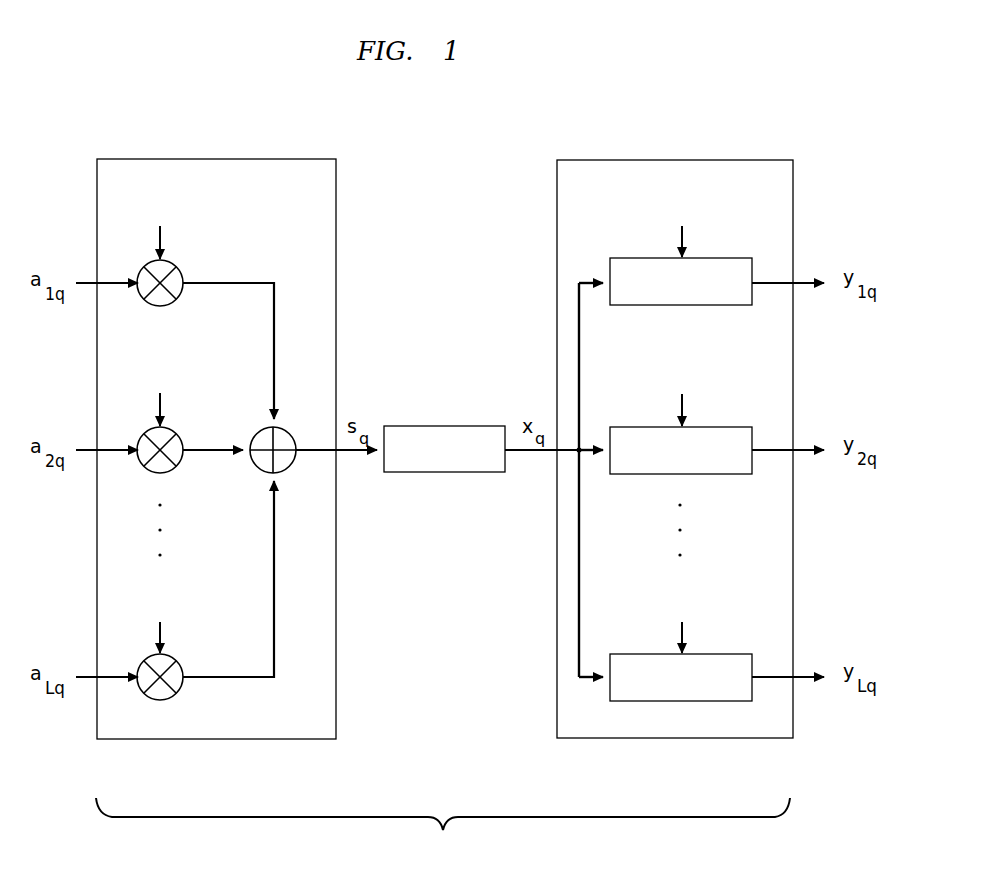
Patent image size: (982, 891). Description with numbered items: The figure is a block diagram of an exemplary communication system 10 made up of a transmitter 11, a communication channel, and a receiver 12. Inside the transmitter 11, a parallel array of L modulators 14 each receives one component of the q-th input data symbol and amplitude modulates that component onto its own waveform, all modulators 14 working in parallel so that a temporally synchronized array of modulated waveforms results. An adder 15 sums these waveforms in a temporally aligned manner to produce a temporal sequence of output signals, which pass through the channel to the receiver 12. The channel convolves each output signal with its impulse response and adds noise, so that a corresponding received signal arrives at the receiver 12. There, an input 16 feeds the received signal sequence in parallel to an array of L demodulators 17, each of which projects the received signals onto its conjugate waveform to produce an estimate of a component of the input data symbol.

The communication system 10 is at (443, 832).
The transmitter 11 is at (314, 199).
The receiver 12 is at (770, 199).
The modulator 14 is at (146, 303).
The adder 15 is at (260, 470).
The input 16 is at (593, 453).
The demodulator 17 is at (660, 305).